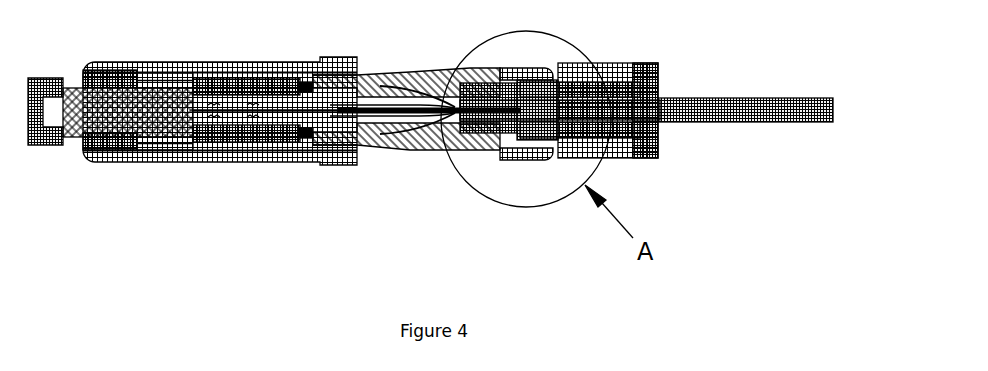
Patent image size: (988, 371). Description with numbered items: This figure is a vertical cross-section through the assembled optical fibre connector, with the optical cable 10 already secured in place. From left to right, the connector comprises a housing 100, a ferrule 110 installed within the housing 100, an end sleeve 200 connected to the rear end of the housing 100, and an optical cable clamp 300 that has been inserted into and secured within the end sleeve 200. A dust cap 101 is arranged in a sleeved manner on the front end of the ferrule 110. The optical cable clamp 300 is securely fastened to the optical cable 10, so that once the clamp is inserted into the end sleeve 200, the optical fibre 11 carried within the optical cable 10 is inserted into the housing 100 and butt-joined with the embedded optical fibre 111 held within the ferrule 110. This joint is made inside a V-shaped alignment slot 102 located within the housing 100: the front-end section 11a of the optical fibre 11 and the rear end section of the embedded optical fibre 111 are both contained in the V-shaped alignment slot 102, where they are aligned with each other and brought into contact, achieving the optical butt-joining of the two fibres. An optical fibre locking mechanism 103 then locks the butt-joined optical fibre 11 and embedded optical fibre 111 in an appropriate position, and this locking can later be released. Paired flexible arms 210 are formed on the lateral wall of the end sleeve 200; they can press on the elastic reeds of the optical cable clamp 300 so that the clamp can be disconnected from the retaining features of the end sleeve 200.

The optical cable 10 is at (725, 98).
The optical fibre 11 is at (413, 148).
The front-end section 11a is at (240, 153).
The housing 100 is at (212, 62).
The dust cap 101 is at (57, 78).
The V-shaped alignment slot 102 is at (226, 130).
The optical fibre locking mechanism 103 is at (263, 157).
The ferrule 110 is at (112, 158).
The embedded optical fibre 111 is at (188, 122).
The end sleeve 200 is at (413, 70).
The flexible arms 210 is at (517, 152).
The optical cable clamp 300 is at (627, 150).